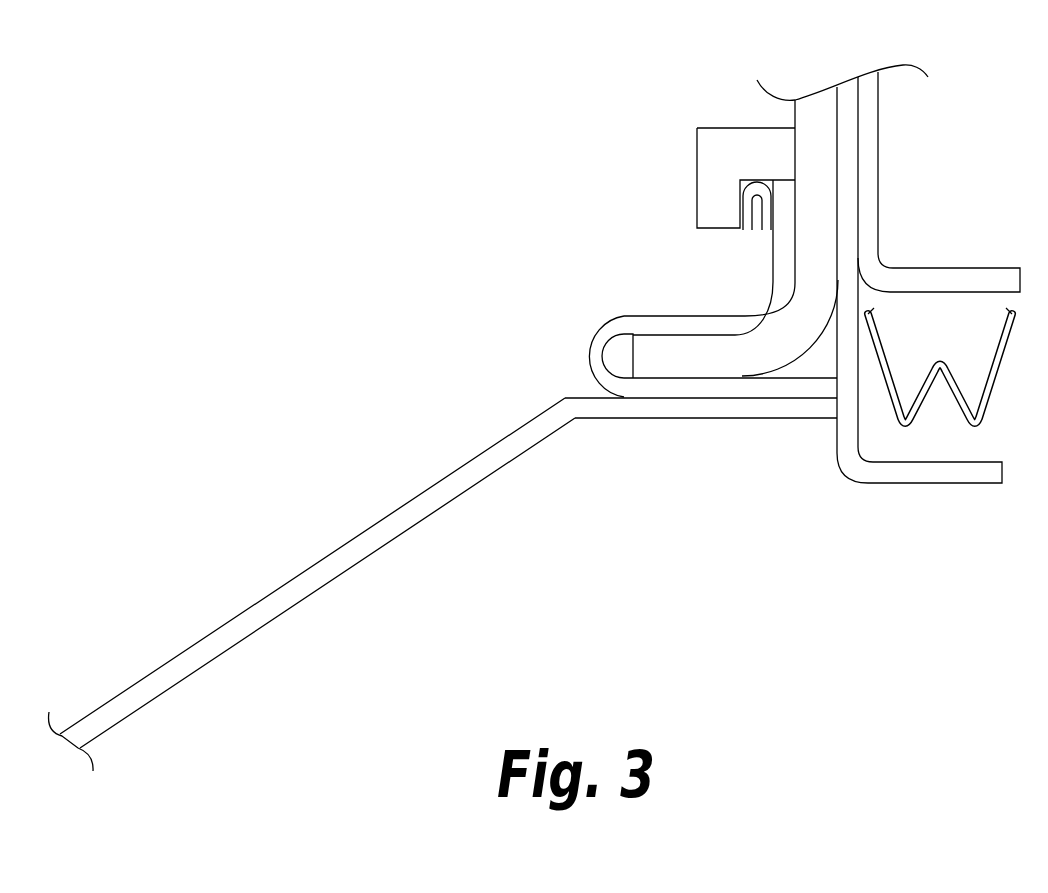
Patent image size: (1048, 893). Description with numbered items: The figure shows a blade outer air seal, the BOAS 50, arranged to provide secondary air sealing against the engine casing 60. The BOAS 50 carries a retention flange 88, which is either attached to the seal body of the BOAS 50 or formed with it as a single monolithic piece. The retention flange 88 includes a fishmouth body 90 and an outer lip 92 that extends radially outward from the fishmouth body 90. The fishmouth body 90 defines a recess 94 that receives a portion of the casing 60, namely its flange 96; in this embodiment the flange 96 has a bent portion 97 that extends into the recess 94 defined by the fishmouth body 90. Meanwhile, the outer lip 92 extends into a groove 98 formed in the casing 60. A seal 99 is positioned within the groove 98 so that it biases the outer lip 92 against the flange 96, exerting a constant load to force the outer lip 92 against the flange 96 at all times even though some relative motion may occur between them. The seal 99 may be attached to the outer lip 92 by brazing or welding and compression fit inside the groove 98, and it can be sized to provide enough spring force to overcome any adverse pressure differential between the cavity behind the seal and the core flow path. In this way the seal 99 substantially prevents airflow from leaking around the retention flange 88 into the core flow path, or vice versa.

The BOAS 50 is at (443, 579).
The retention flange 88 is at (614, 314).
The casing 60 is at (715, 127).
The groove 98 is at (742, 178).
The seal 99 is at (773, 180).
The outer lip 92 is at (782, 230).
The recess 94 is at (612, 358).
The bent portion 97 is at (693, 362).
The flange 96 is at (800, 334).
The fishmouth body 90 is at (625, 388).